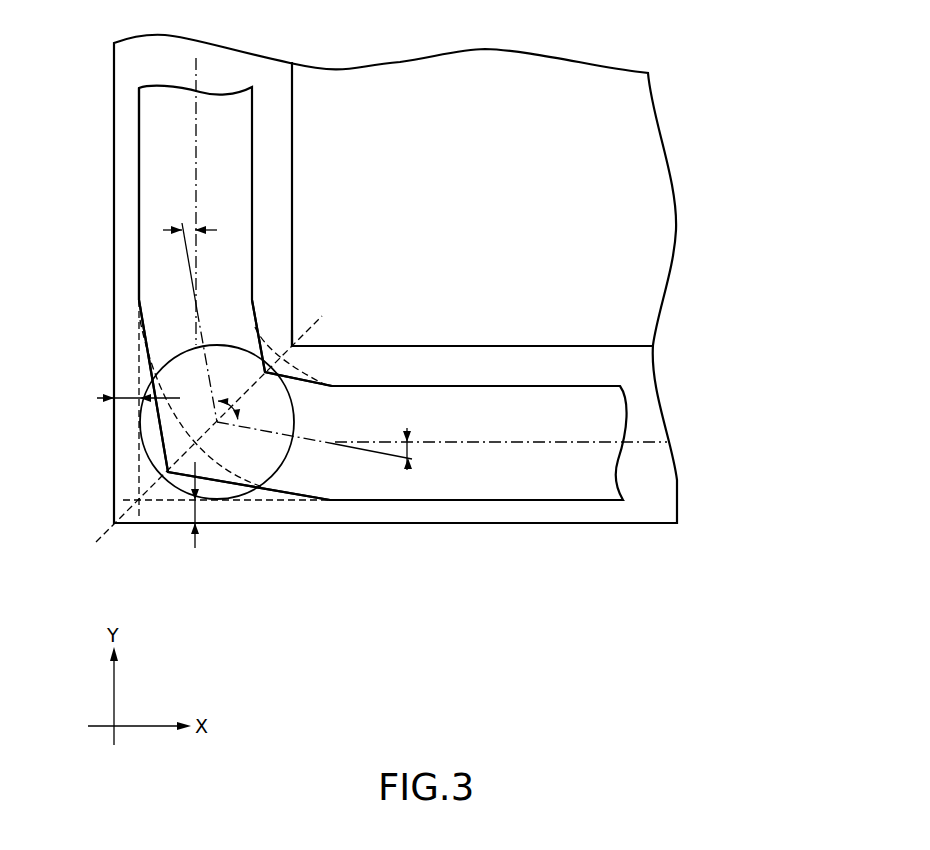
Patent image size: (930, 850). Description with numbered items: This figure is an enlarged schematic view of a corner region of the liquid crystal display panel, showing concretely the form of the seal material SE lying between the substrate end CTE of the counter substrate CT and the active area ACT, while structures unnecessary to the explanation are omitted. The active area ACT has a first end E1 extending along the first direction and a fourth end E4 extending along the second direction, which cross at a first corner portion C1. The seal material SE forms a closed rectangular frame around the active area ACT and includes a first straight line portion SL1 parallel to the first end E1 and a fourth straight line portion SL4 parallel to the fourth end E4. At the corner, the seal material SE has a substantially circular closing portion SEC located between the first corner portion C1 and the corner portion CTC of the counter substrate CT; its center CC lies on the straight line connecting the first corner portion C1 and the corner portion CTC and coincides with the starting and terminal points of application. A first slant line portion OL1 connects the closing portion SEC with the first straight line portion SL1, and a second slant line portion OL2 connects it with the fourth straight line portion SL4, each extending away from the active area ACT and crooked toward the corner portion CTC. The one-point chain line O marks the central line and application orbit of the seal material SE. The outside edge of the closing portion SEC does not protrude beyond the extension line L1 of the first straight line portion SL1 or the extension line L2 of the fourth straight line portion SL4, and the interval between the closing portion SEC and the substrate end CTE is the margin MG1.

The one-point chain line O is at (200, 72).
The fourth straight line portion SL4 is at (139, 157).
The fourth end E4 is at (291, 237).
The active area ACT is at (641, 292).
The second slant line portion OL2 is at (148, 360).
The first corner portion C1 is at (293, 349).
The first end E1 is at (500, 347).
The margin MG1 is at (122, 399).
The center CC is at (219, 424).
The seal material SE is at (644, 419).
The extension line L2 is at (139, 483).
The corner portion CTC is at (209, 450).
The extension line L1 is at (166, 503).
The first slant line portion OL1 is at (288, 468).
The closing portion SEC is at (295, 468).
The first straight line portion SL1 is at (473, 503).
The counter substrate CT is at (557, 512).
The substrate end CTE is at (584, 536).